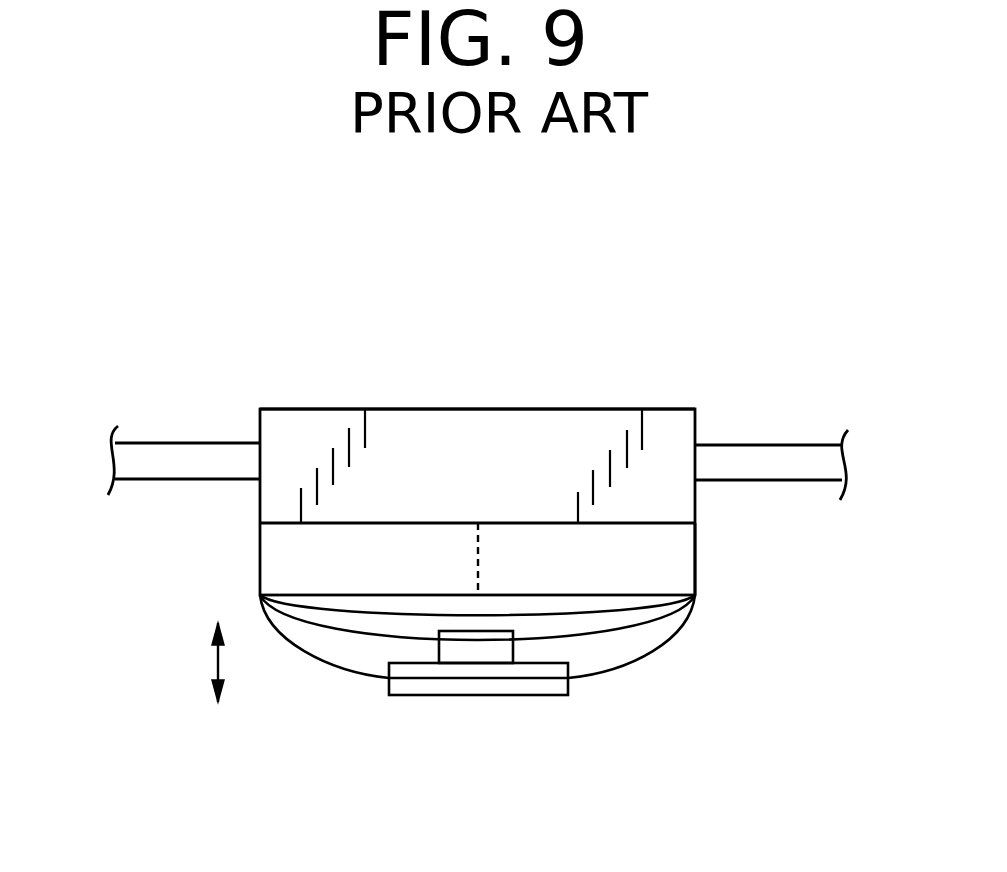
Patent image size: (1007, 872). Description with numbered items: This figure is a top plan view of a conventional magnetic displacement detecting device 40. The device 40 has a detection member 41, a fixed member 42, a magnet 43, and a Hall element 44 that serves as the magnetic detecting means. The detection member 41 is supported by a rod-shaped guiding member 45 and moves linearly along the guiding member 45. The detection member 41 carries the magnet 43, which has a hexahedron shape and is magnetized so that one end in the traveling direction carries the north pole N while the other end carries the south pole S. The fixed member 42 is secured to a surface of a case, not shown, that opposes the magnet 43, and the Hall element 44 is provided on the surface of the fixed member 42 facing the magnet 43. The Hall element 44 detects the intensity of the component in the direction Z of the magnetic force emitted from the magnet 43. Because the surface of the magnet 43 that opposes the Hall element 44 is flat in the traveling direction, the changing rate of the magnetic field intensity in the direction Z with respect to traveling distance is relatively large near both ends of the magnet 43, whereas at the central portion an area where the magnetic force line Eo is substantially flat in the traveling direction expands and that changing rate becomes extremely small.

The magnetic displacement detecting device 40 is at (657, 363).
The detection member 41 is at (472, 427).
The fixed member 42 is at (418, 687).
The magnet 43 is at (695, 558).
The Hall element 44 is at (495, 657).
The guiding member 45 is at (773, 467).
The north pole N is at (273, 539).
The south pole S is at (675, 578).
The magnetic force line Eo is at (632, 668).
The z direction Z is at (202, 662).